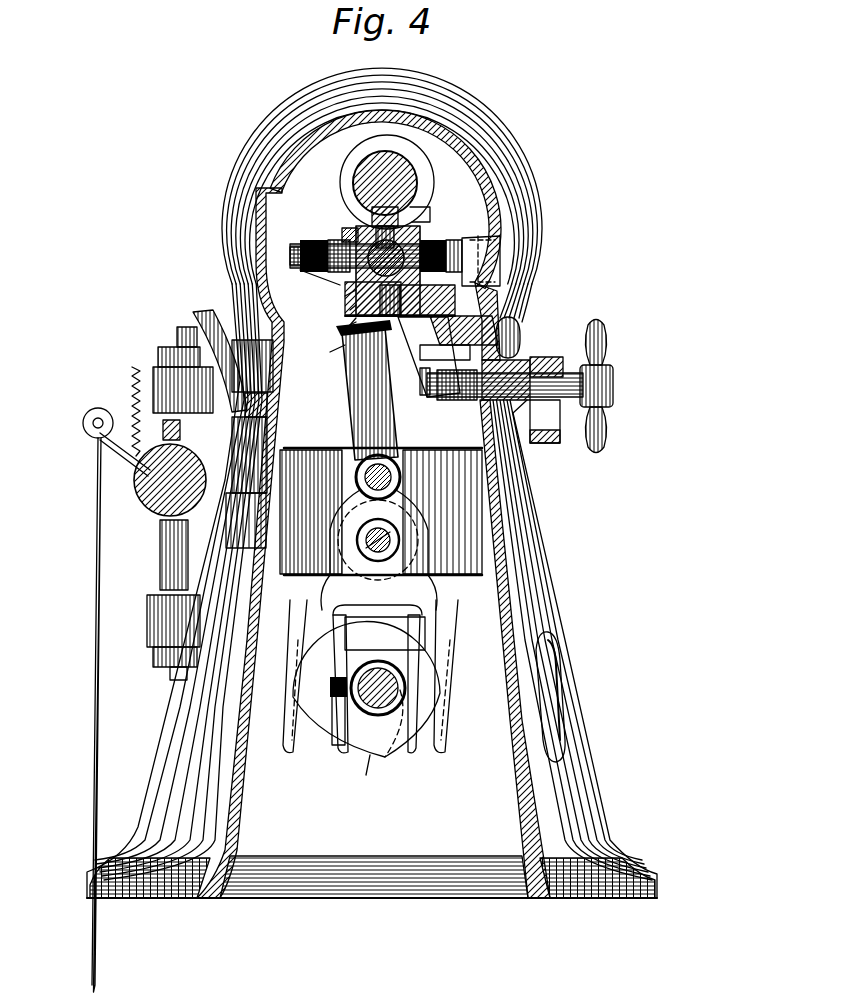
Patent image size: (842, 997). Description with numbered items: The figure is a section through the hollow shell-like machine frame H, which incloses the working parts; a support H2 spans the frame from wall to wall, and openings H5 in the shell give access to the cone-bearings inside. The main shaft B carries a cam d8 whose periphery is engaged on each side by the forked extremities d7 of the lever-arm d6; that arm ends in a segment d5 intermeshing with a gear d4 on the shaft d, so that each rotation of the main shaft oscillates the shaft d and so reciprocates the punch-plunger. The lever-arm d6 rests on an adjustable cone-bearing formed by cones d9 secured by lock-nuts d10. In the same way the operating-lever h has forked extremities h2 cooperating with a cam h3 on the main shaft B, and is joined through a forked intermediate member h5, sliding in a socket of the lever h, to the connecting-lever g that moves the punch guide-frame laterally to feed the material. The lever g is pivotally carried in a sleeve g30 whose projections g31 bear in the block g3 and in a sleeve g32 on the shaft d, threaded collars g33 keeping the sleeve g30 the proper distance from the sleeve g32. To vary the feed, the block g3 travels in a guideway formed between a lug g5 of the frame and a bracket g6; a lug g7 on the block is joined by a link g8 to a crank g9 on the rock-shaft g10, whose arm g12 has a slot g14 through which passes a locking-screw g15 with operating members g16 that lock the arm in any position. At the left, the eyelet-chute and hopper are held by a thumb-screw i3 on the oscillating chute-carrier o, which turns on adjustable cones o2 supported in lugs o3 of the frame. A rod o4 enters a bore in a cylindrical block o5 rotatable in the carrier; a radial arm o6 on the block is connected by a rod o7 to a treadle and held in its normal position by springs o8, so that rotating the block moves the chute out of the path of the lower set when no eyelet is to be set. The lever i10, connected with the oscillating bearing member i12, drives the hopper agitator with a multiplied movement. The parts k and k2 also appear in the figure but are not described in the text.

The frame H is at (535, 558).
The frame cross rail H2 is at (381, 511).
The frame trunnion / slot H5 is at (520, 330).
The shaft d is at (360, 183).
The gear d4 is at (365, 210).
The segment d5 is at (500, 240).
The lever-arm d6 is at (425, 455).
The forked extremities d7 is at (286, 755).
The cam d8 is at (342, 758).
The cones d9 is at (380, 560).
The lock-nuts d10 is at (360, 552).
The connecting-lever g is at (345, 296).
The block g3 is at (350, 310).
The lug g5 is at (432, 330).
The bracket g6 is at (340, 330).
The lug g7 is at (420, 240).
The link g8 is at (462, 237).
The crank g9 is at (470, 345).
The rock-shaft g10 is at (445, 380).
The arm g12 is at (555, 350).
The slot g14 is at (545, 443).
The locking-screw g15 is at (613, 386).
The operating members g16 is at (606, 336).
The sleeve g30 is at (307, 277).
The projections g31 is at (415, 190).
The sleeve g32 is at (345, 232).
The threaded collars g33 is at (432, 212).
The operating-lever h is at (356, 250).
The forked extremities h2 is at (432, 700).
The cam h3 is at (368, 758).
The intermediate member h5 is at (343, 327).
The yoke k is at (390, 490).
The slide k2 is at (336, 742).
The main shaft B is at (382, 660).
The thumb-screw i3 is at (272, 404).
The lever i10 is at (208, 312).
The oscillating bearing member i12 is at (268, 447).
The chute-carrier o is at (160, 448).
The cones o2 is at (170, 596).
The lugs o3 is at (160, 650).
The rod o4 is at (160, 478).
The block o5 is at (163, 520).
The radial arm o6 is at (104, 410).
The rod o7 is at (97, 560).
The springs o8 is at (129, 398).